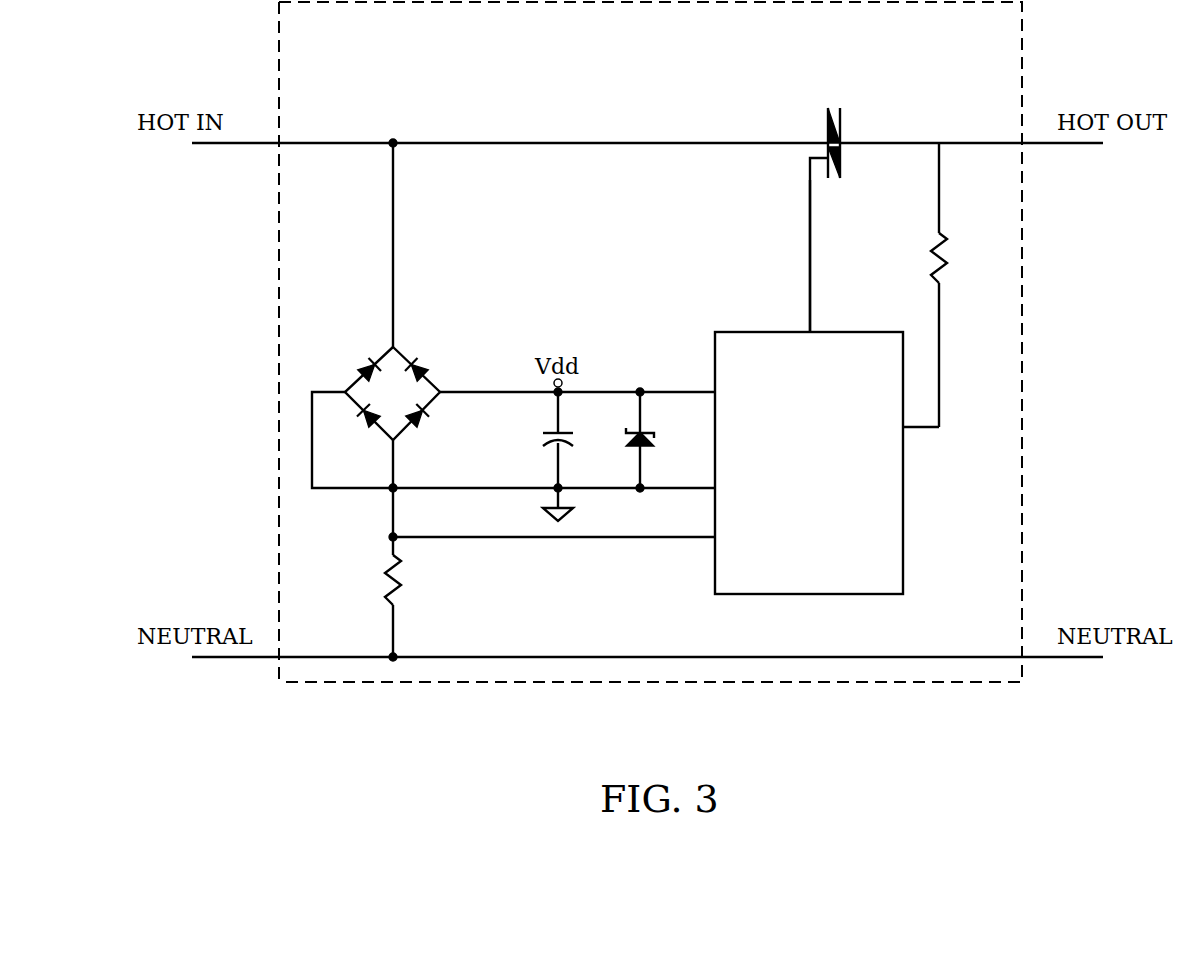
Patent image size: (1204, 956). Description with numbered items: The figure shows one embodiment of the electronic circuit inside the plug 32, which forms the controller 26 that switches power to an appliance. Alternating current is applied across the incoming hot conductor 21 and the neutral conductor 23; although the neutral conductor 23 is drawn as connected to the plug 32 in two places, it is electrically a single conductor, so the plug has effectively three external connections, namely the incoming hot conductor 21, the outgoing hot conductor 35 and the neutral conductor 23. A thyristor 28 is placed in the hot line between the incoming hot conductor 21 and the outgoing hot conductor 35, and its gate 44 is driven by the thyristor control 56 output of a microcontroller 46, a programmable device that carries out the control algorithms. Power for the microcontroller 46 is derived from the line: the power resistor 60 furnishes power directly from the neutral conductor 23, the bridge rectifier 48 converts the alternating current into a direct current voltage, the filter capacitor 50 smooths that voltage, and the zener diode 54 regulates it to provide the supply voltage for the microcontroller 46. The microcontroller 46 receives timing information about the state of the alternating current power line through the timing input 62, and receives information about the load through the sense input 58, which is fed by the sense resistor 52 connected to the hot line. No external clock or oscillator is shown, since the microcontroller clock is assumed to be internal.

The incoming hot conductor 21 is at (245, 145).
The neutral conductor 23 is at (250, 659).
The controller 26 is at (277, 292).
The thyristor 28 is at (826, 120).
The plug 32 is at (862, 683).
The outgoing hot conductor 35 is at (1055, 145).
The gate of thyristor 44 is at (806, 158).
The microcontroller 46 is at (865, 596).
The bridge rectifier 48 is at (352, 380).
The filter capacitor 50 is at (540, 436).
The sense resistor 52 is at (932, 255).
The zener diode 54 is at (655, 438).
The thyristor control 56 is at (806, 300).
The sense input 58 is at (940, 428).
The power resistor 60 is at (402, 585).
The timing input 62 is at (607, 540).